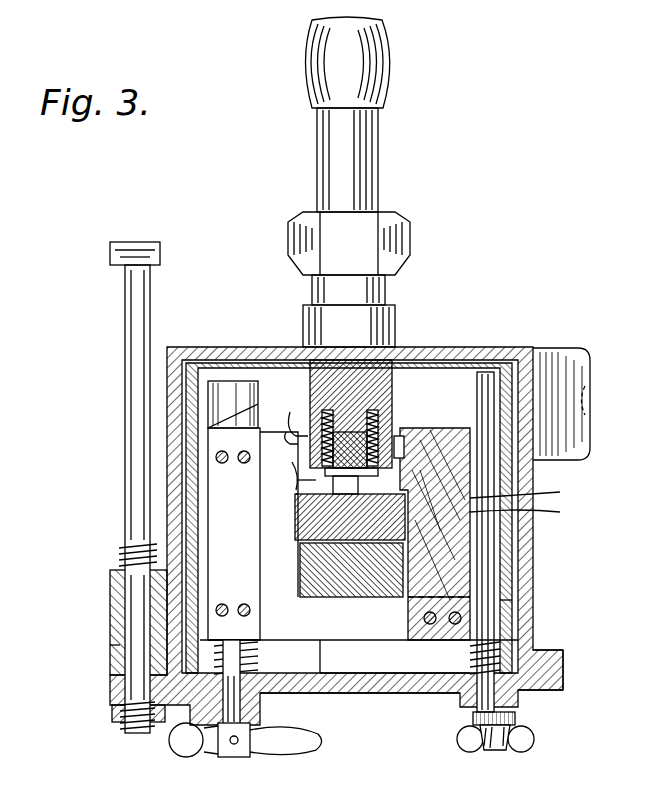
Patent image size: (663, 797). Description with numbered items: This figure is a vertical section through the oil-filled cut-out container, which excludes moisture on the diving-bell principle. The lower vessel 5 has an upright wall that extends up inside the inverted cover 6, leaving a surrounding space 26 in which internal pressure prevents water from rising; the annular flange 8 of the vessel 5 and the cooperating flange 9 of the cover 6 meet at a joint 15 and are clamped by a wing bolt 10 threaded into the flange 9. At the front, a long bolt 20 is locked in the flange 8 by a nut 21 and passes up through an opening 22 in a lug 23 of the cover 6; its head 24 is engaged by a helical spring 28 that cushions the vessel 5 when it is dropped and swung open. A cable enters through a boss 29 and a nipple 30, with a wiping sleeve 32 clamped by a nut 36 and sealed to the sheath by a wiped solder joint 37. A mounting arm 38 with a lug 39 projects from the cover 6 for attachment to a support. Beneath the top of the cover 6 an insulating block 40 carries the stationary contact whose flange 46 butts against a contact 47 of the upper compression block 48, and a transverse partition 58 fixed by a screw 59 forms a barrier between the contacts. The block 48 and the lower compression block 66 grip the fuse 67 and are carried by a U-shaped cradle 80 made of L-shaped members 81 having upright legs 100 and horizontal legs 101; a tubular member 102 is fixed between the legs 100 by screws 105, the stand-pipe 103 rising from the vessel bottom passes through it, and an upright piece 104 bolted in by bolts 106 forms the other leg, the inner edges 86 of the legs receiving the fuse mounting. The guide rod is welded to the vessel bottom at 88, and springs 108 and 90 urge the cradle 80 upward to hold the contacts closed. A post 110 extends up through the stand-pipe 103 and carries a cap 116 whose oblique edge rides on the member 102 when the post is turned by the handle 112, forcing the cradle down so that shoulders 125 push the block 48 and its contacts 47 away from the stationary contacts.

The vessel 5 is at (508, 538).
The cover 6 is at (522, 558).
The annular flange 8 is at (565, 687).
The annular flange 9 is at (545, 662).
The wing bolt 10 is at (495, 752).
The joint 15 is at (565, 668).
The bolt 20 is at (125, 432).
The nut 21 is at (112, 713).
The opening 22 is at (110, 642).
The lug 23 is at (110, 602).
The head 24 is at (137, 242).
The surrounding space 26 is at (512, 600).
The helical spring 28 is at (120, 548).
The boss 29 is at (395, 326).
The nipple 30 is at (318, 288).
The wiping sleeve 32 is at (325, 142).
The nut 36 is at (300, 240).
The wiped solder joint 37 is at (396, 50).
The mounting arm 38 is at (548, 348).
The lug 39 is at (586, 384).
The block of insulation 40 is at (402, 440).
The flange 46 is at (438, 470).
The contact 47 is at (358, 485).
The compression block 48 is at (280, 504).
The transverse partition 58 is at (398, 362).
The screw 59 is at (392, 402).
The compression block 66 is at (425, 601).
The fuse 67 is at (300, 541).
The cradle 80 is at (366, 645).
The L-shaped member 81 is at (359, 656).
The inner edge 86 is at (298, 437).
The weld 88 is at (478, 714).
The spring 90 is at (468, 660).
The upright leg 100 is at (268, 500).
The horizontal leg 101 is at (395, 660).
The tubular member 102 is at (262, 634).
The stand-pipe 103 is at (255, 658).
The upright piece 104 is at (527, 488).
The screw 105 is at (242, 464).
The bolt 106 is at (424, 618).
The spring 108 is at (240, 650).
The post 110 is at (242, 708).
The operating handle 112 is at (298, 752).
The cap 116 is at (224, 396).
The shoulder 125 is at (435, 483).